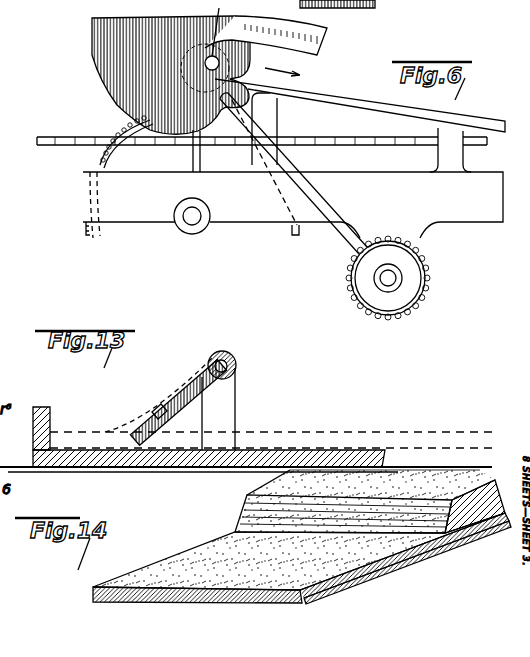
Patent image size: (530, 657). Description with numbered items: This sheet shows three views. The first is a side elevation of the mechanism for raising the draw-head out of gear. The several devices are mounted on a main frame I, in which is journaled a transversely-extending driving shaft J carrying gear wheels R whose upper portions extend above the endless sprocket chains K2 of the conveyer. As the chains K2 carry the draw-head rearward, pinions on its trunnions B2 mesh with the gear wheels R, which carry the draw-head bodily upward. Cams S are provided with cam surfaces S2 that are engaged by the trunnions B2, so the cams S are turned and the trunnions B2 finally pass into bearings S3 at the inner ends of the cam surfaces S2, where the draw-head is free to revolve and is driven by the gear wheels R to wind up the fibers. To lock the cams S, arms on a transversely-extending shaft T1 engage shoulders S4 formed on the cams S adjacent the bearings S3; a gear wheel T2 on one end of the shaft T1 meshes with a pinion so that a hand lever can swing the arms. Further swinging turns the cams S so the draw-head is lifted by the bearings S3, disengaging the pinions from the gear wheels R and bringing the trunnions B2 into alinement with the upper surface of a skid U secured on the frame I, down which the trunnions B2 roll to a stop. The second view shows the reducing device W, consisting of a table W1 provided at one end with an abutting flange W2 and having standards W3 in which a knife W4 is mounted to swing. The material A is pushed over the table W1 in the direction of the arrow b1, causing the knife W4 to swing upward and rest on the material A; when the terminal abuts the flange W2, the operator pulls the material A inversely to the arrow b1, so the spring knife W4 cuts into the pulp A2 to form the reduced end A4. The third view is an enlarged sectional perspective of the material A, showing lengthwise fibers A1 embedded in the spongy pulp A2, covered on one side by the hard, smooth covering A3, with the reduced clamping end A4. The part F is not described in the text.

In FIG. 6, the cam S is at (92, 42).
In FIG. 6, the cam surface S2 is at (322, 48).
In FIG. 6, the bearing S3 is at (215, 28).
In FIG. 6, the shoulder S4 is at (265, 166).
In FIG. 6, the draw-head B is at (226, 52).
In FIG. 6, the trunnion B2 is at (204, 63).
In FIG. 6, the shaft T1 is at (388, 280).
In FIG. 6, the gear wheel T2 is at (415, 305).
In FIG. 6, the skid U is at (372, 100).
In FIG. 6, the sprocket chain K2 is at (68, 138).
In FIG. 6, the frame I is at (83, 198).
In FIG. 6, the gear wheel R is at (88, 236).
In FIG. 6, the driving shaft J is at (193, 218).
In FIG. 6, the feed bar F is at (375, 4).
In FIG. 13, the reducing device W is at (222, 354).
In FIG. 13, the table W1 is at (150, 470).
In FIG. 13, the abutting flange W2 is at (47, 407).
In FIG. 13, the standard W3 is at (238, 395).
In FIG. 13, the knife W4 is at (181, 394).
In FIG. 13, the material A is at (343, 440).
In FIG. 14, the material A is at (299, 530).
In FIG. 14, the fiber A1 is at (302, 598).
In FIG. 14, the pulp A2 is at (468, 533).
In FIG. 14, the covering A3 is at (393, 568).
In FIG. 14, the reduced end A4 is at (92, 592).
In FIG. 13, the arrow b1 is at (425, 418).